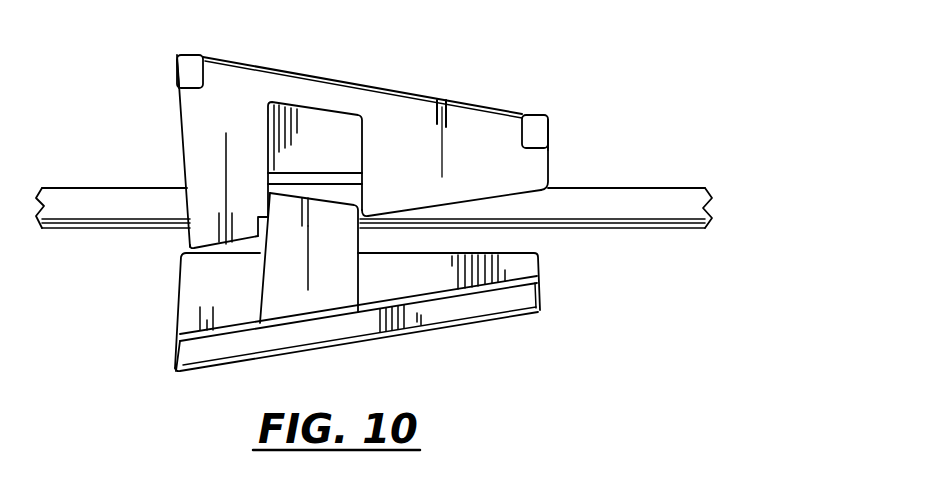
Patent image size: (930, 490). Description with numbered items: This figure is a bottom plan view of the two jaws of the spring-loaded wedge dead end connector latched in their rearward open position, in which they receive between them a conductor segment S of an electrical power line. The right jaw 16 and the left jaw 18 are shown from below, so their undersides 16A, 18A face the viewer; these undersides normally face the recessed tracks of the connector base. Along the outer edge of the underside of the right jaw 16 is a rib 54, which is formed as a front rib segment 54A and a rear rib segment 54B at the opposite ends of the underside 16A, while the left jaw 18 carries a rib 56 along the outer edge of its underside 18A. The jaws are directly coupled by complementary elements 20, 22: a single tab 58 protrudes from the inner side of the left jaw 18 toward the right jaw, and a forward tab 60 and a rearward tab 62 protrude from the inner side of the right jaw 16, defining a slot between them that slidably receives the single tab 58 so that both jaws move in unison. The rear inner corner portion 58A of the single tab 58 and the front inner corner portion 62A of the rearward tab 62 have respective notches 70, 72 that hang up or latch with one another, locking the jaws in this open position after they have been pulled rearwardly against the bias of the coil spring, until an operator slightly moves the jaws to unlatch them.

The right jaw 16 is at (397, 90).
The underside of right jaw 16A is at (323, 147).
The rib of right jaw 54 is at (183, 62).
The front rib segment 54A is at (538, 138).
The rear rib segment 54B is at (182, 73).
The forward tab 60 is at (540, 202).
The conductor segment S is at (657, 192).
The complementary element 20 is at (482, 212).
The front inner corner portion of rearward tab 62A is at (218, 220).
The rearward tab 62 is at (205, 230).
The notch 70 is at (267, 210).
The notch 72 is at (256, 218).
The single tab 58 is at (337, 283).
The rear inner corner portion of single tab 58A is at (320, 293).
The complementary element 22 is at (243, 280).
The rib of left jaw 56 is at (207, 350).
The left jaw 18 is at (503, 320).
The underside of left jaw 18A is at (447, 280).